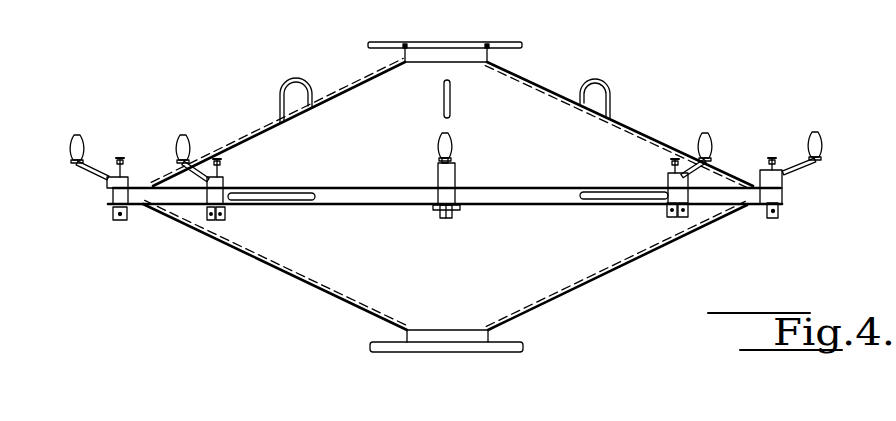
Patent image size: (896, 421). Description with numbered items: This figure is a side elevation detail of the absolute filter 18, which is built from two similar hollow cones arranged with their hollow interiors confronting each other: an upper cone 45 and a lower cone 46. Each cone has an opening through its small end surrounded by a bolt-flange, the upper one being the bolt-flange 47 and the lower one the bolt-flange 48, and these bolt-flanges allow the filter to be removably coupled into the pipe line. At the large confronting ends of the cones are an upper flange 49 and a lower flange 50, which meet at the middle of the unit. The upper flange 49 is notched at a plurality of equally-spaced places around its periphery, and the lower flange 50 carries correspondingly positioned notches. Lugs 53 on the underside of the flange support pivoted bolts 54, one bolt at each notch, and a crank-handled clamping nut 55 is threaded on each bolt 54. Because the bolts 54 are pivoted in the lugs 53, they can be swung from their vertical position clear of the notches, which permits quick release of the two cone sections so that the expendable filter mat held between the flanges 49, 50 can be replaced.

The absolute filter 18 is at (448, 190).
The upper cone 45 is at (541, 87).
The lower cone 46 is at (590, 283).
The bolt-flange 47 is at (368, 44).
The bolt-flange 48 is at (525, 346).
The upper flange 49 is at (752, 186).
The lower flange 50 is at (702, 206).
The lugs 53 is at (457, 217).
The pivoted bolts 54 is at (773, 193).
The crank-handled clamping nut 55 is at (452, 167).